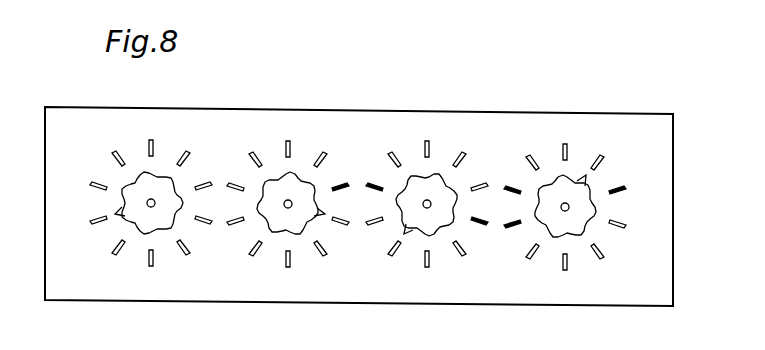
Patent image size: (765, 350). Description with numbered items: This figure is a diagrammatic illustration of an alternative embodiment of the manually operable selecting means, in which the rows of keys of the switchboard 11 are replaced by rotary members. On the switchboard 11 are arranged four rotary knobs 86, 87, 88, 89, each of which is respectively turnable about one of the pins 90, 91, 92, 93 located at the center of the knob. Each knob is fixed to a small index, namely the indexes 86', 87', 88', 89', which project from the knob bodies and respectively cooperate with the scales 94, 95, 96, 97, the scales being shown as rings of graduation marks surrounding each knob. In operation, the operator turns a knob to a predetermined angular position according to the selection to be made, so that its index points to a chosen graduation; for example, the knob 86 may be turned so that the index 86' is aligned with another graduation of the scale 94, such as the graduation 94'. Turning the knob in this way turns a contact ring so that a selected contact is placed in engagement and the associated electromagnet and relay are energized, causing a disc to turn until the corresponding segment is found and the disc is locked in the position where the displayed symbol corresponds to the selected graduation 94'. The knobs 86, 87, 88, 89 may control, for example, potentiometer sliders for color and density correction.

The switchboard 11 is at (45, 275).
The rotary knob 86 is at (134, 187).
The rotary knob 87 is at (304, 186).
The rotary knob 88 is at (416, 189).
The rotary knob 89 is at (569, 189).
The index 86' is at (97, 177).
The index 87' is at (337, 179).
The index 88' is at (389, 188).
The index 89' is at (597, 151).
The pin 90 is at (151, 203).
The pin 91 is at (288, 204).
The pin 92 is at (427, 204).
The pin 93 is at (565, 207).
The scale 94 is at (125, 291).
The graduation 94' is at (213, 161).
The scale 95 is at (255, 257).
The scale 96 is at (392, 257).
The scale 97 is at (622, 228).